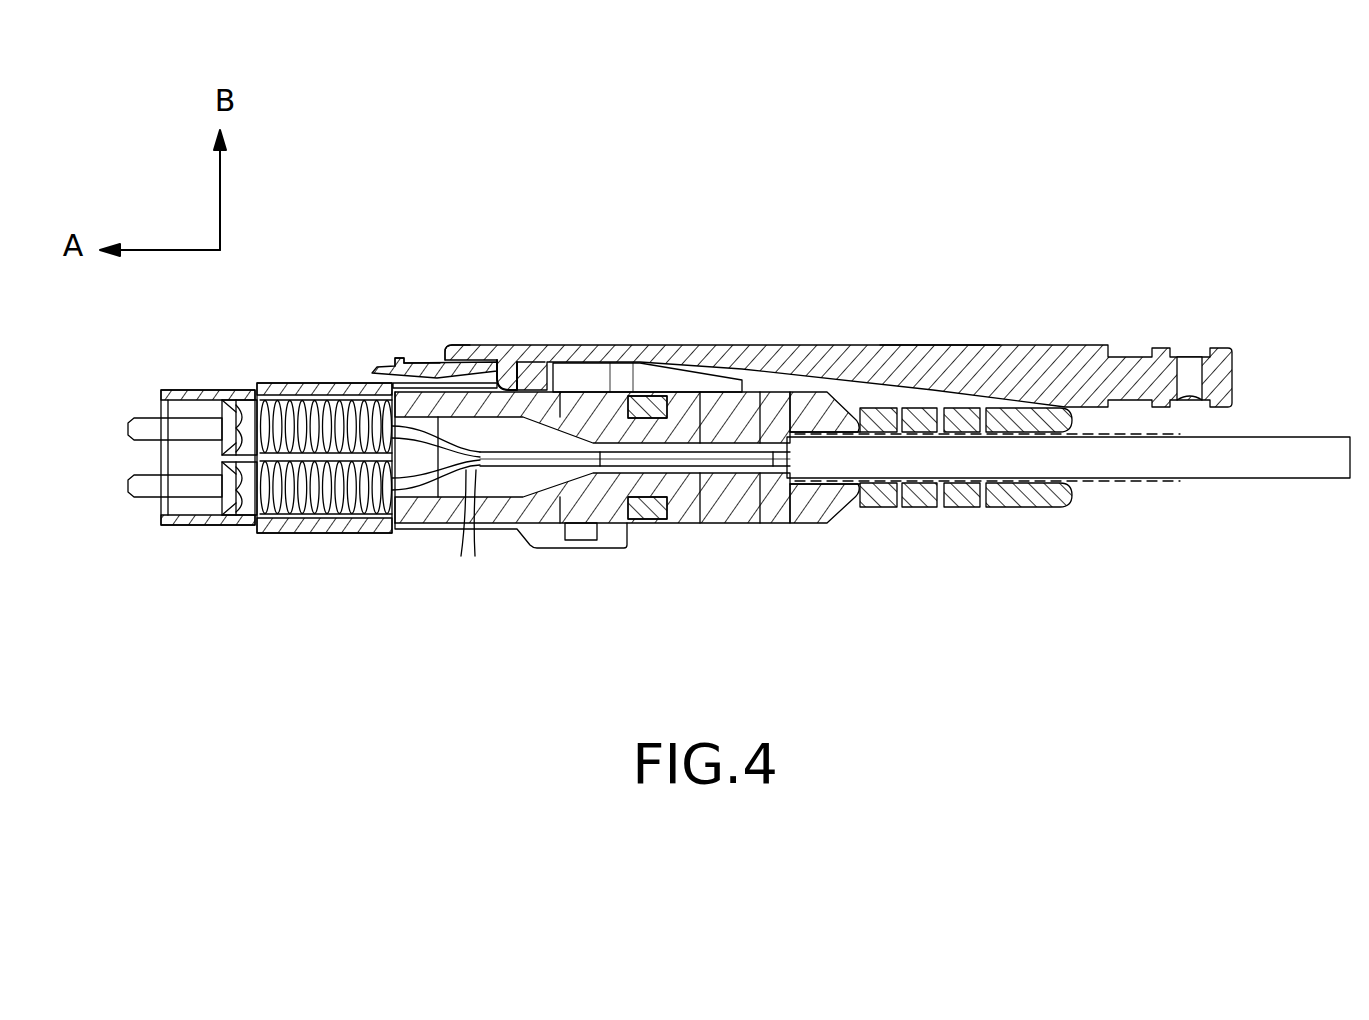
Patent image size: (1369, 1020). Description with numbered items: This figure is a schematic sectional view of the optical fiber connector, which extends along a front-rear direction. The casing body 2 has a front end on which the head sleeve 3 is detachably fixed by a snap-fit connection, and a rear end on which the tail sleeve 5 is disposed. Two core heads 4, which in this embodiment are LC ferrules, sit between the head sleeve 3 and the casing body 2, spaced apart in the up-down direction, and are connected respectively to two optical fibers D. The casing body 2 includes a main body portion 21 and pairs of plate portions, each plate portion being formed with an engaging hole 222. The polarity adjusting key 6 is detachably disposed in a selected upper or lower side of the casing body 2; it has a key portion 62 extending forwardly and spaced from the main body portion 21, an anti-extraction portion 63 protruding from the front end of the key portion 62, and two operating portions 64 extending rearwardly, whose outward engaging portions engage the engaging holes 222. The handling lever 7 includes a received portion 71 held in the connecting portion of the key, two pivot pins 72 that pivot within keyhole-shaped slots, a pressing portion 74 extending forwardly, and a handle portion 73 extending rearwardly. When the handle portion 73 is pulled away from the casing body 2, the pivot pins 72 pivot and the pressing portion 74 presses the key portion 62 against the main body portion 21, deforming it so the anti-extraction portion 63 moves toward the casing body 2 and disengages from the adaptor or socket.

The casing body 2 is at (562, 560).
The main body portion 21 is at (422, 522).
The engaging hole 222 is at (590, 532).
The head sleeve 3 is at (190, 525).
The core heads 4 is at (130, 492).
The tail sleeve 5 is at (782, 524).
The polarity adjusting key 6 is at (386, 312).
The key portion 62 is at (420, 369).
The anti-extraction portion 63 is at (397, 360).
The operating portions 64 is at (690, 377).
The handling lever 7 is at (838, 279).
The received portion 71 is at (513, 357).
The pivot pins 72 is at (527, 364).
The handle portion 73 is at (932, 358).
The pressing portion 74 is at (446, 346).
The optical fibers D is at (468, 533).